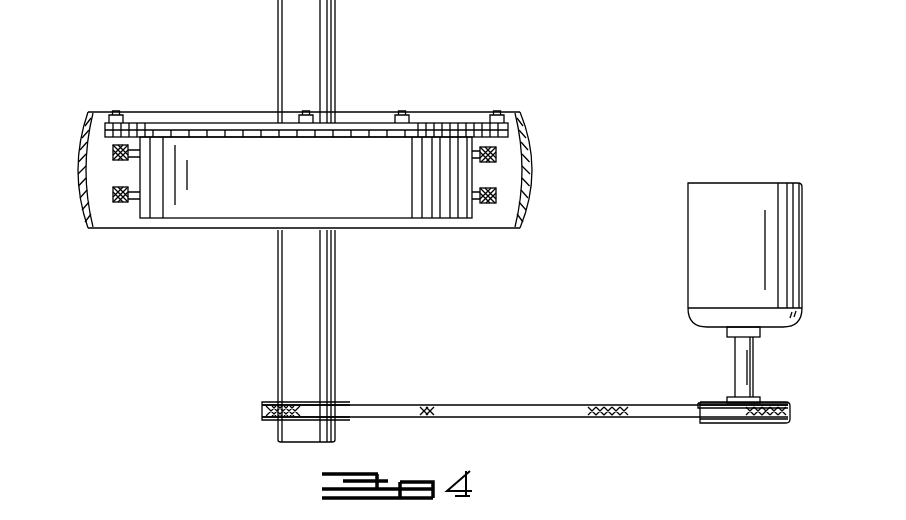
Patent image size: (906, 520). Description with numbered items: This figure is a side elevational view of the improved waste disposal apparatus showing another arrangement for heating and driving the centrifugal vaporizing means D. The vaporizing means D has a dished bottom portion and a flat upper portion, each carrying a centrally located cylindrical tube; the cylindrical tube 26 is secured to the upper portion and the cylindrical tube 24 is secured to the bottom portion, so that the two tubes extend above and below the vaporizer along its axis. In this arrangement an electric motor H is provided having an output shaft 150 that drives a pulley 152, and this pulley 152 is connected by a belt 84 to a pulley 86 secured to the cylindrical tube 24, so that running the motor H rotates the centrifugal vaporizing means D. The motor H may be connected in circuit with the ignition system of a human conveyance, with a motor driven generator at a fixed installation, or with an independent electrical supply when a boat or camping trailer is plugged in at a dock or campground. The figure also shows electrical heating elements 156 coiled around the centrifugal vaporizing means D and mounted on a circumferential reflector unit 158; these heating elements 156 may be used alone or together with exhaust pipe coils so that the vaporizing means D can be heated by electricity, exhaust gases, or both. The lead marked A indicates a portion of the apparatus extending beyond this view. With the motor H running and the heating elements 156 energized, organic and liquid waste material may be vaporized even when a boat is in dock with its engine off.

The cylindrical tube 26 is at (325, 27).
The cylindrical tube 24 is at (320, 333).
The circumferential reflector unit 158 is at (530, 133).
The centrifugal vaporizing means D is at (427, 122).
The electrical heating elements 156 is at (500, 152).
The belt 84 is at (448, 410).
The pulley 86 is at (268, 422).
The pulley 152 is at (742, 424).
The electric motor H is at (687, 267).
The output shaft 150 is at (743, 361).
The assembly A is at (700, 511).